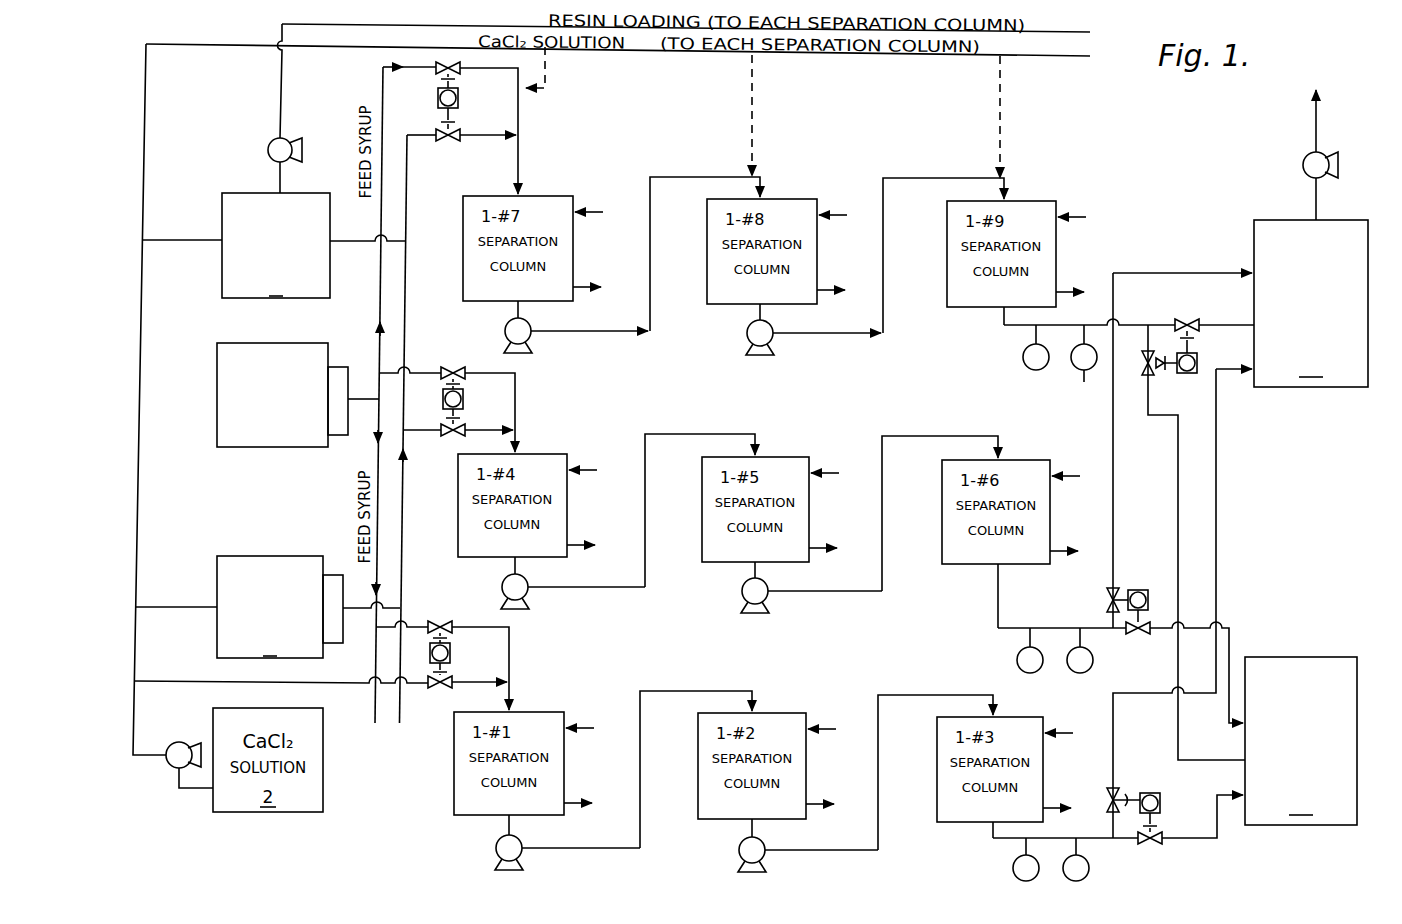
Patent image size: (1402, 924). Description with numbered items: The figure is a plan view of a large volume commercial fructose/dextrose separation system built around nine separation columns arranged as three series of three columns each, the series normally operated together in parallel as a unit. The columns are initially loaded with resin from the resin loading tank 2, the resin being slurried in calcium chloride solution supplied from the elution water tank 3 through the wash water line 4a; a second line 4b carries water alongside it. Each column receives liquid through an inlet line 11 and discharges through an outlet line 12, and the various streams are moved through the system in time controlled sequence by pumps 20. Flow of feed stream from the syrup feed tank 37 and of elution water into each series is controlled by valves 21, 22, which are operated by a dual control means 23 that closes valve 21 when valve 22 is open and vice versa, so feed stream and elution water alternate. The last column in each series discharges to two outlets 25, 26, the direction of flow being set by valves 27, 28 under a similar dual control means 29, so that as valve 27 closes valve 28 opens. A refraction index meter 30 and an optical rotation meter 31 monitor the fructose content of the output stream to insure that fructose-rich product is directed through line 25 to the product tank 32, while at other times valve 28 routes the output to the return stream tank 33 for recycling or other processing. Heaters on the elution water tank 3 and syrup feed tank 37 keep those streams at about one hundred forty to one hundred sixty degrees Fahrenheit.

The resin loading tank 2 is at (273, 245).
The elution water tank 3 is at (268, 607).
The wash water line 4a is at (141, 308).
The water line 4b is at (405, 302).
The inlet lines 11 is at (521, 178).
The outlet lines 12 is at (518, 312).
The pumps 20 is at (268, 150).
The valve 21 is at (454, 141).
The valve 22 is at (462, 72).
The dual control means 23 is at (459, 98).
The outlet 25 is at (1218, 328).
The outlet 26 is at (1176, 443).
The valve 27 is at (1180, 320).
The valve 28 is at (1156, 372).
The dual control means 29 is at (1187, 373).
The refraction index meter 30 is at (1022, 358).
The optical rotation meter 31 is at (1098, 869).
The product tank 32 is at (1311, 238).
The return stream tank 33 is at (1301, 741).
The syrup feed tank 37 is at (272, 448).